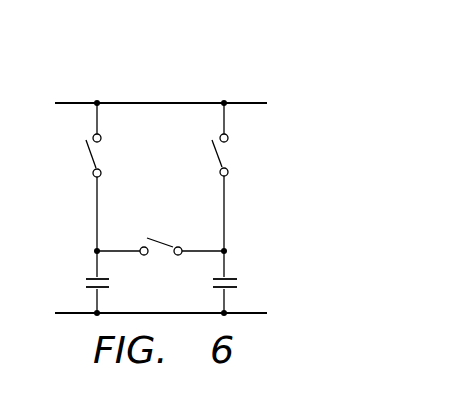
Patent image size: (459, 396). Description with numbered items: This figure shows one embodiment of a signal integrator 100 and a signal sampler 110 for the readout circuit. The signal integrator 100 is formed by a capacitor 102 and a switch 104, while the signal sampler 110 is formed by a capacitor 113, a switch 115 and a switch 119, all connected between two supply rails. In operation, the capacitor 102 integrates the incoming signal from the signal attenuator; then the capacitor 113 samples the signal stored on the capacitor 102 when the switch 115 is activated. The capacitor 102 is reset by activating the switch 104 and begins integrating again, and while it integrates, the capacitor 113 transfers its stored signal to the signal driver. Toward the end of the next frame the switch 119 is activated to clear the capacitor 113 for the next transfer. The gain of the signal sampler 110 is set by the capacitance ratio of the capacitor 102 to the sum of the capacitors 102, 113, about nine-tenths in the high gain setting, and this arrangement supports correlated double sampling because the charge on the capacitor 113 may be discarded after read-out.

The signal integrator 100 is at (60, 218).
The signal sampler 110 is at (172, 78).
The switch 104 is at (86, 154).
The switch 119 is at (212, 155).
The switch 115 is at (160, 243).
The capacitor 102 is at (86, 284).
The capacitor 113 is at (238, 283).